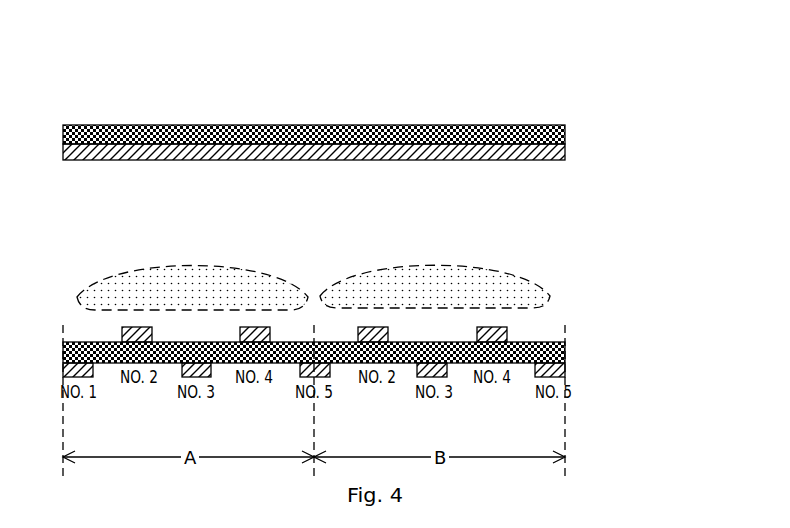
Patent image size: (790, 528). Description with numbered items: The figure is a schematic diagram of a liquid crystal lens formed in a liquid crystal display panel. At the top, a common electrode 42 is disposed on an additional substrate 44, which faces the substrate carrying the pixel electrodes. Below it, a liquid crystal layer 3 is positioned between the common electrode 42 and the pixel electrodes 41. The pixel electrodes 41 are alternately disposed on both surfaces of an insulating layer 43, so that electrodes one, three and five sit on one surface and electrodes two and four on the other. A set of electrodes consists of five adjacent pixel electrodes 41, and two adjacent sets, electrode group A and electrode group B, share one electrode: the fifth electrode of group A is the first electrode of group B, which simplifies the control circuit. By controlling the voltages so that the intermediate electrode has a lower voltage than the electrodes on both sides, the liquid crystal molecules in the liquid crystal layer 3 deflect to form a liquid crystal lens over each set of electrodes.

The additional substrate 44 is at (487, 130).
The common electrode 42 is at (565, 157).
The liquid crystal layer 3 is at (551, 298).
The insulating layer 43 is at (566, 342).
The pixel electrode 41 is at (566, 362).